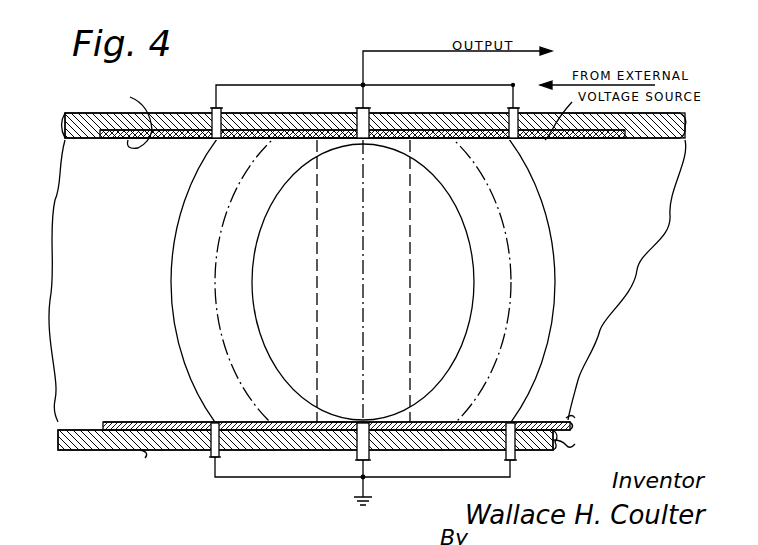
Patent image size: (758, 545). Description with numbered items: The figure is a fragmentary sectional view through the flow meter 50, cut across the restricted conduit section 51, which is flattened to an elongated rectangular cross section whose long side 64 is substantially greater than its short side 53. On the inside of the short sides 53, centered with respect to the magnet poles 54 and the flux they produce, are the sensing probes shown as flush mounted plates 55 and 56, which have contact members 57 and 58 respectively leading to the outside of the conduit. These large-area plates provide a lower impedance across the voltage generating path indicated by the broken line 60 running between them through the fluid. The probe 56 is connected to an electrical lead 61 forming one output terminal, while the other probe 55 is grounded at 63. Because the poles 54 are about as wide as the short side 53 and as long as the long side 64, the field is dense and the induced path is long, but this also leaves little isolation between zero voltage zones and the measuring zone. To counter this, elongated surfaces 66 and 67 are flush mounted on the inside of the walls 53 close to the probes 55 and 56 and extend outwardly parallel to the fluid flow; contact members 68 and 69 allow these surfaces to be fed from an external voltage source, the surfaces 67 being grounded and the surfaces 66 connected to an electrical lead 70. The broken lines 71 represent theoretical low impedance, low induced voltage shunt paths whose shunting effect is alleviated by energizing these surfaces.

The flow meter 50 is at (576, 418).
The restricted conduit section 51 is at (655, 224).
The short sides 53 is at (297, 113).
The magnet poles 54 is at (412, 306).
The flush mounted plate 55 is at (337, 430).
The flush mounted plate 56 is at (384, 114).
The contact member 57 is at (372, 460).
The contact member 58 is at (357, 113).
The voltage generating path 60 is at (365, 268).
The electrical lead 61 is at (362, 58).
The ground 63 is at (367, 480).
The long side 64 is at (120, 294).
The elongated surfaces 66 is at (334, 116).
The elongated surfaces 67 is at (142, 452).
The contact members 68 is at (214, 112).
The contact members 69 is at (210, 458).
The electrical lead 70 is at (292, 85).
The shunt paths 71 is at (225, 237).